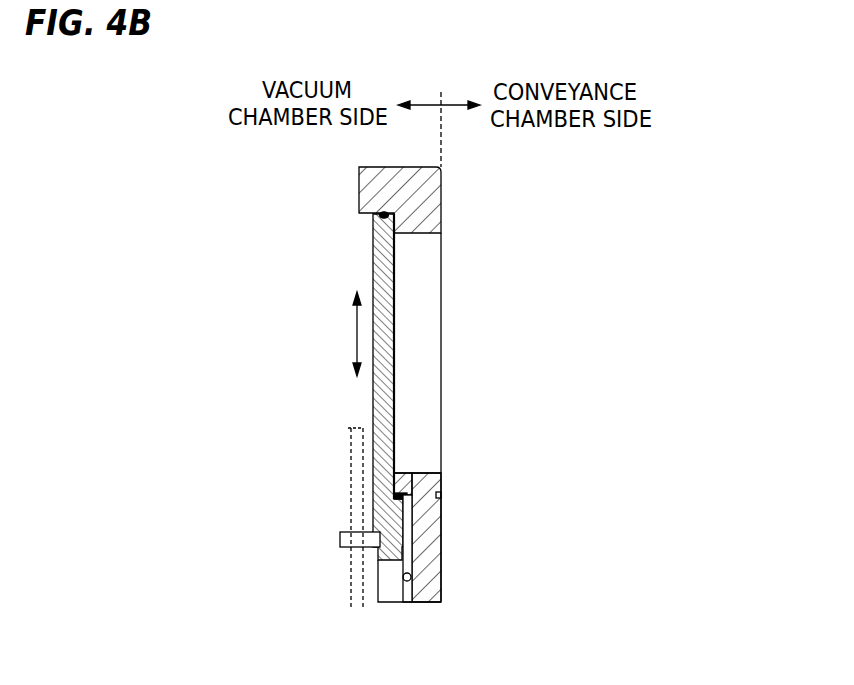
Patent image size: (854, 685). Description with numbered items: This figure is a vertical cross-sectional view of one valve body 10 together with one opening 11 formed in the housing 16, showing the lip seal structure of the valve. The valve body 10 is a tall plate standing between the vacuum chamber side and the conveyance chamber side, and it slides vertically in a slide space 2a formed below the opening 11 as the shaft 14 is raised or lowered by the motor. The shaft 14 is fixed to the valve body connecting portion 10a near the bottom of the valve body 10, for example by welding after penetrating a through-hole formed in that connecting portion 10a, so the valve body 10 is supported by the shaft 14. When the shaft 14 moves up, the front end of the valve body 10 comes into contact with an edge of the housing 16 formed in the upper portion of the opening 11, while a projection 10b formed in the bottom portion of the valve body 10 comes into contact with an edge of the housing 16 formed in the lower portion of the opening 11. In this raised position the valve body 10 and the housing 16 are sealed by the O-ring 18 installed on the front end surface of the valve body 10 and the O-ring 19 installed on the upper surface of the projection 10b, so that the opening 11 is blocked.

The slide space 2a is at (411, 576).
The valve body 10 is at (373, 258).
The valve body connecting portion 10a is at (340, 536).
The projection 10b is at (413, 503).
The opening 11 is at (440, 296).
The shaft 14 is at (351, 468).
The housing 16 is at (417, 167).
The O-ring 18 is at (384, 211).
The O-ring 19 is at (404, 492).